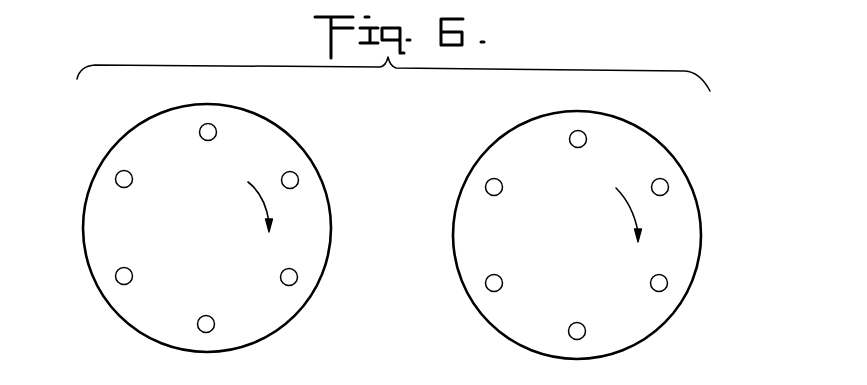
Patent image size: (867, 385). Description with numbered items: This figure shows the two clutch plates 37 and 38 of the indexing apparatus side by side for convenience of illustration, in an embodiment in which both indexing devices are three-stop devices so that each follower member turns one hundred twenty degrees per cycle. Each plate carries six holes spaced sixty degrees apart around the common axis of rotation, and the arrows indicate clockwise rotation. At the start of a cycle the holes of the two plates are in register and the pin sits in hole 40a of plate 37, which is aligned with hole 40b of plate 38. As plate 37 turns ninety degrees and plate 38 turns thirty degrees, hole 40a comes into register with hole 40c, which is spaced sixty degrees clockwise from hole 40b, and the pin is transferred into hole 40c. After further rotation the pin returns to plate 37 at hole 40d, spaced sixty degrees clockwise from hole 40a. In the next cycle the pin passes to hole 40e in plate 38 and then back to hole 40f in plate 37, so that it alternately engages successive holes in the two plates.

The clutch plate 37 is at (288, 147).
The clutch plate 38 is at (498, 310).
The hole 40a is at (210, 130).
The hole 40b is at (580, 137).
The hole 40c is at (662, 187).
The hole 40d is at (292, 181).
The hole 40e is at (661, 284).
The hole 40f is at (291, 278).